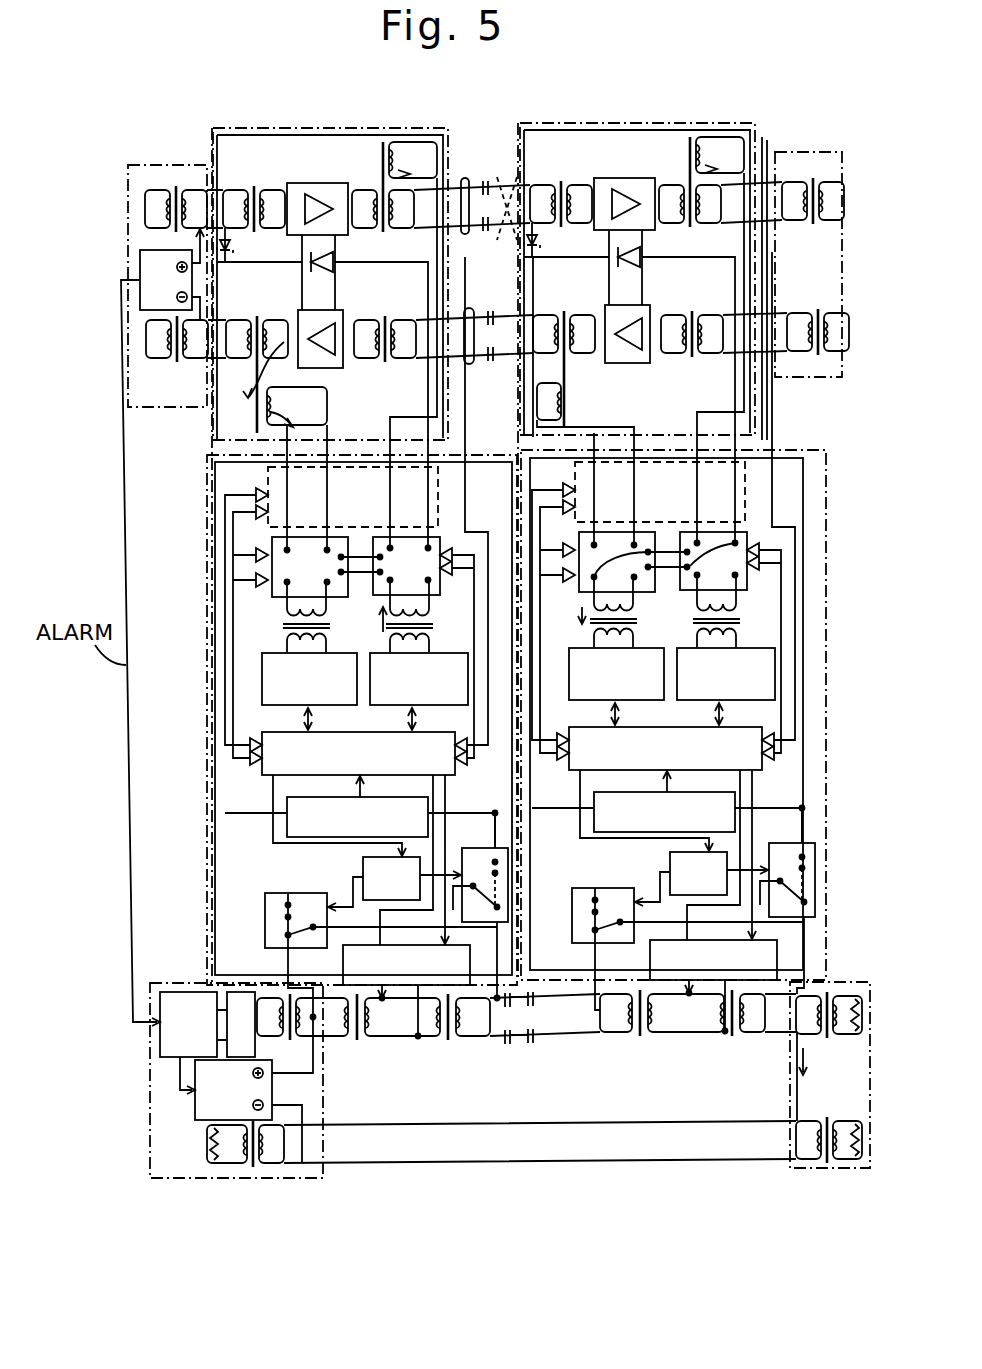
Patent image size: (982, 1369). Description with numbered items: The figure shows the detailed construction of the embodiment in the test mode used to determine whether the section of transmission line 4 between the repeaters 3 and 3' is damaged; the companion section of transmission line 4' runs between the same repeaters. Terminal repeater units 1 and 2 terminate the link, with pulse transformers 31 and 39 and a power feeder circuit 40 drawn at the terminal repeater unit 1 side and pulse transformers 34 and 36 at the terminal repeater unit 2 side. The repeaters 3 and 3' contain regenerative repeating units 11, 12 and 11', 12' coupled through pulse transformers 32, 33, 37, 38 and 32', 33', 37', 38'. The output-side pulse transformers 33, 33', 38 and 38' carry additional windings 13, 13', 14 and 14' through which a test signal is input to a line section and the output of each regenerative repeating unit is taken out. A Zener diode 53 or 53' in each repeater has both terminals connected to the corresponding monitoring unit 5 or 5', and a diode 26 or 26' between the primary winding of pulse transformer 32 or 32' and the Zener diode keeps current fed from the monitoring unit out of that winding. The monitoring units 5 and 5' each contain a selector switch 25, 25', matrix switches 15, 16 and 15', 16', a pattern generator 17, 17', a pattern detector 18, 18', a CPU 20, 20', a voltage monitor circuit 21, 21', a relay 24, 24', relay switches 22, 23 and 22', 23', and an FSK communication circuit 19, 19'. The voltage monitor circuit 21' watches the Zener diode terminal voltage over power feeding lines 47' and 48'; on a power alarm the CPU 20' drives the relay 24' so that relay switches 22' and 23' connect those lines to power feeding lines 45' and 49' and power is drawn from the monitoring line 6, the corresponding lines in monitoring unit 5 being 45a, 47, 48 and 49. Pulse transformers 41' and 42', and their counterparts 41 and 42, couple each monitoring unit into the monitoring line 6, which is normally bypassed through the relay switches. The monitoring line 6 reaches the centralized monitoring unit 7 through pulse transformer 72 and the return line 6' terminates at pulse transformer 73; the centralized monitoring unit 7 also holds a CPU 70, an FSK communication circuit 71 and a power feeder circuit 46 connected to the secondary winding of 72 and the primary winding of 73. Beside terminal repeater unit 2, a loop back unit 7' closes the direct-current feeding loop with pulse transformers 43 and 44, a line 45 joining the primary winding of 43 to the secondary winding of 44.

The terminal repeater unit 1 is at (150, 407).
The terminal repeater unit 2 is at (835, 377).
The repeater 3 is at (336, 263).
The repeater 3' is at (625, 258).
The transmission line 4 is at (472, 193).
The transmission line 4' is at (474, 322).
The monitoring unit 5 is at (362, 723).
The monitoring unit 5' is at (693, 733).
The monitoring line 6 is at (520, 1040).
The return line 6' is at (540, 1167).
The centralized monitoring unit 7 is at (256, 1080).
The loop back unit 7' is at (834, 1104).
The regenerative repeating unit 11 is at (317, 187).
The regenerative repeating unit 11' is at (624, 184).
The regenerative repeating unit 12 is at (338, 357).
The regenerative repeating unit 12' is at (634, 361).
The additional winding 13 is at (410, 264).
The additional winding 13' is at (718, 259).
The additional winding 14 is at (274, 390).
The additional winding 14' is at (585, 395).
The matrix switch 15 is at (390, 583).
The matrix switch 15' is at (742, 545).
The matrix switch 16 is at (307, 578).
The matrix switch 16' is at (618, 573).
The pattern generator 17 is at (422, 643).
The pattern generator 17' is at (736, 638).
The pattern detector 18 is at (296, 643).
The pattern detector 18' is at (628, 638).
The FSK communication circuit 19 is at (422, 954).
The FSK communication circuit 19' is at (742, 954).
The central processing unit 20 is at (374, 768).
The central processing unit 20' is at (689, 765).
The voltage monitor circuit 21 is at (332, 809).
The voltage monitor circuit 21' is at (640, 806).
The relay switch 22 is at (476, 871).
The relay switch 22' is at (786, 866).
The relay switch 23 is at (273, 919).
The relay switch 23' is at (586, 915).
The relay 24 is at (359, 875).
The relay 24' is at (666, 872).
The selector switch 25 is at (388, 497).
The selector switch 25' is at (691, 492).
The diode 26 is at (246, 245).
The diode 26' is at (559, 242).
The pulse transformer 31 is at (176, 186).
The pulse transformer 32 is at (254, 186).
The pulse transformer 32' is at (561, 182).
The pulse transformer 33 is at (378, 186).
The pulse transformer 33' is at (684, 182).
The pulse transformer 34 is at (813, 224).
The pulse transformer 36 is at (818, 309).
The pulse transformer 37 is at (378, 322).
The pulse transformer 37' is at (700, 356).
The pulse transformer 38 is at (257, 322).
The pulse transformer 38' is at (571, 317).
The pulse transformer 39 is at (177, 362).
The power feeder circuit 40 is at (140, 255).
The transformer 41 is at (398, 1041).
The pulse transformer 41' is at (662, 1035).
The transformer 42 is at (465, 1041).
The pulse transformer 42' is at (739, 1034).
The pulse transformer 43 is at (827, 1038).
The pulse transformer 44 is at (827, 1163).
The line 45 is at (776, 1076).
The power feeding line 45' is at (576, 976).
The connection line 45a is at (288, 963).
The power feeder circuit 46 is at (195, 1112).
The cabinet frame 47 is at (184, 556).
The power feeding line 47' is at (493, 551).
The control bus line 48 is at (481, 504).
The power feeding line 48' is at (816, 499).
The power supply line 49 is at (496, 942).
The power feeding line 49' is at (840, 901).
The Zener diode 53 is at (347, 252).
The Zener diode 53' is at (654, 247).
The CPU 70 is at (165, 992).
The FSK communication circuit 71 is at (240, 992).
The pulse transformer 72 is at (306, 1040).
The pulse transformer 73 is at (253, 1178).